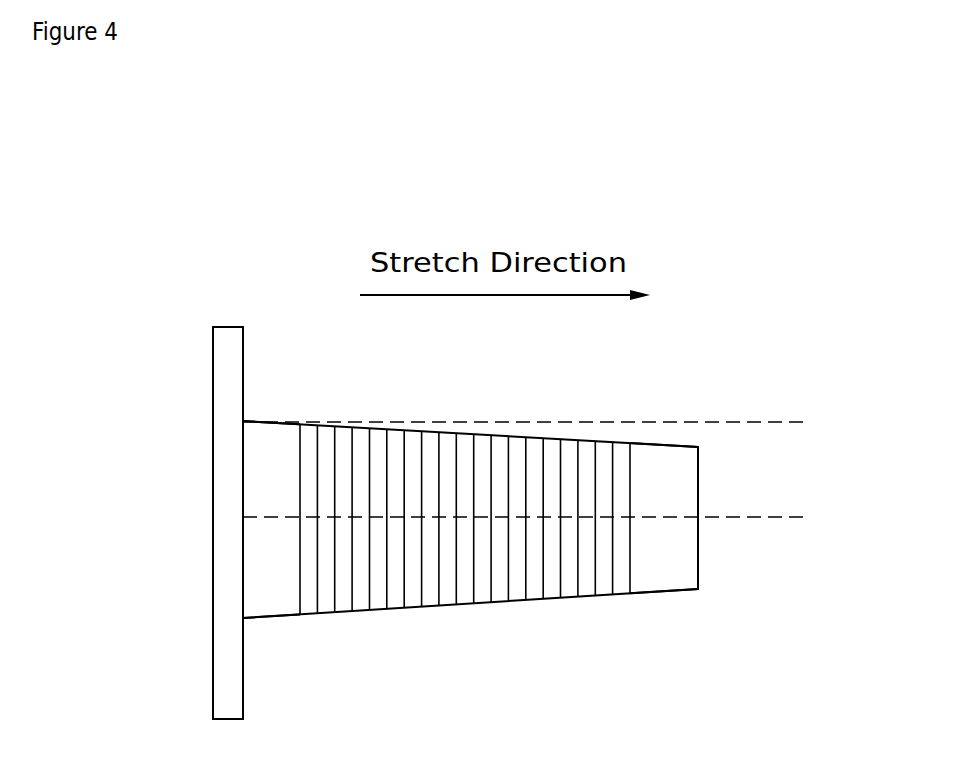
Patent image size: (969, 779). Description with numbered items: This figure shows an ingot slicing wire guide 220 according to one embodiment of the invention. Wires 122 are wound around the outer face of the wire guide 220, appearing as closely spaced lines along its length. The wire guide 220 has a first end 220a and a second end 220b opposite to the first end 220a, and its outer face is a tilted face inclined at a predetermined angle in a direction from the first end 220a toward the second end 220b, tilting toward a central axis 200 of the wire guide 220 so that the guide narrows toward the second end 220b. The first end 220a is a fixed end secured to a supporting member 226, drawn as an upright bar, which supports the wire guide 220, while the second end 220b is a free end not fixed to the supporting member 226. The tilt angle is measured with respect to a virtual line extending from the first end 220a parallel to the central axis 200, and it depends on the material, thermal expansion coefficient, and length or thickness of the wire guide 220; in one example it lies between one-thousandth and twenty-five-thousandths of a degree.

The ingot slicing wire guide 220 is at (760, 263).
The first end 220a is at (270, 440).
The second end 220b is at (670, 460).
The wires 122 is at (630, 567).
The supporting member 226 is at (219, 550).
The central axis 200 is at (758, 517).